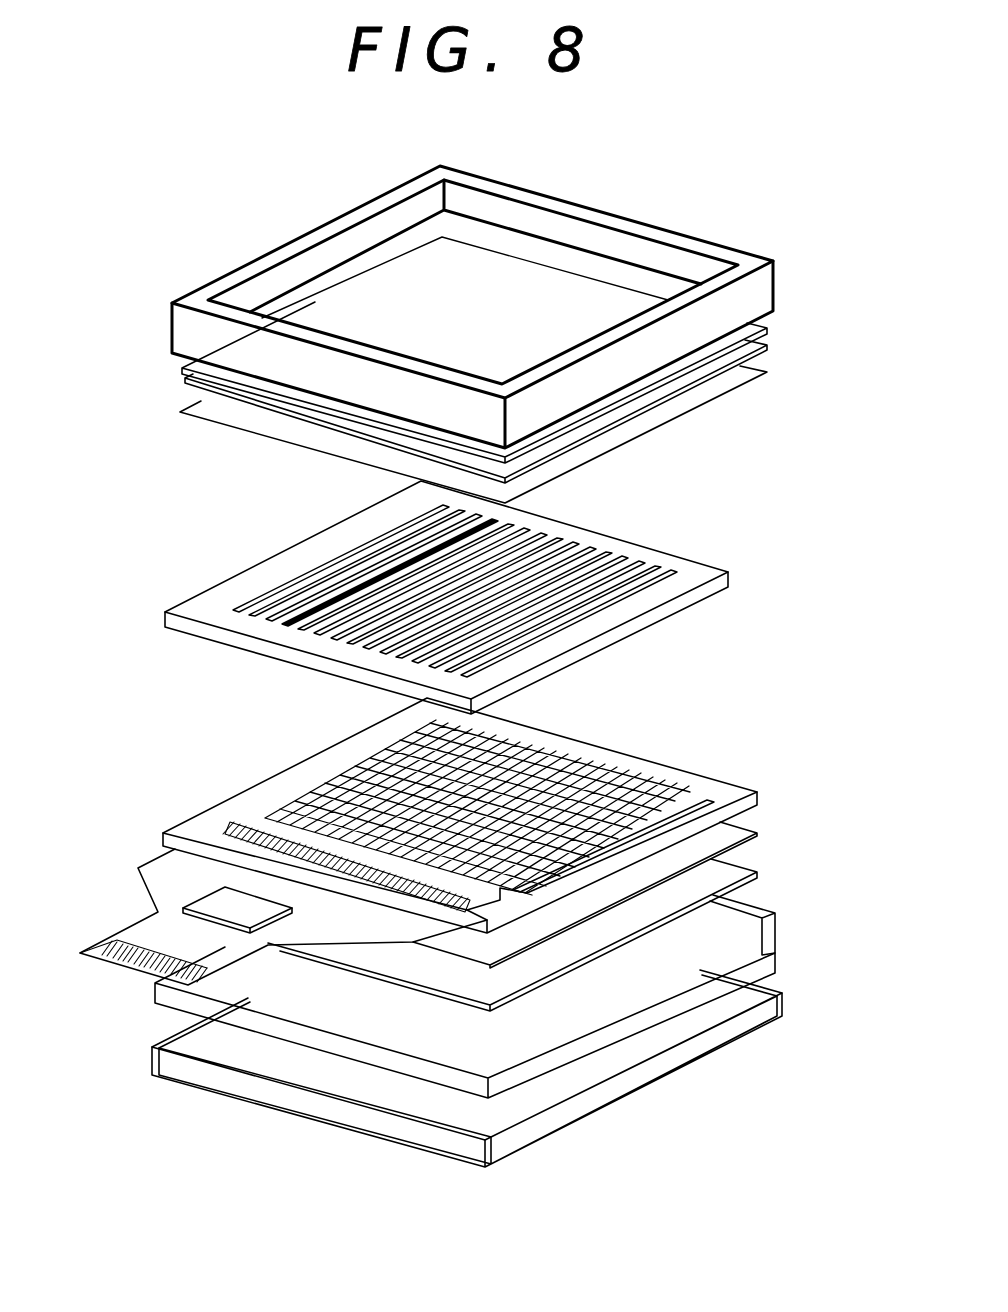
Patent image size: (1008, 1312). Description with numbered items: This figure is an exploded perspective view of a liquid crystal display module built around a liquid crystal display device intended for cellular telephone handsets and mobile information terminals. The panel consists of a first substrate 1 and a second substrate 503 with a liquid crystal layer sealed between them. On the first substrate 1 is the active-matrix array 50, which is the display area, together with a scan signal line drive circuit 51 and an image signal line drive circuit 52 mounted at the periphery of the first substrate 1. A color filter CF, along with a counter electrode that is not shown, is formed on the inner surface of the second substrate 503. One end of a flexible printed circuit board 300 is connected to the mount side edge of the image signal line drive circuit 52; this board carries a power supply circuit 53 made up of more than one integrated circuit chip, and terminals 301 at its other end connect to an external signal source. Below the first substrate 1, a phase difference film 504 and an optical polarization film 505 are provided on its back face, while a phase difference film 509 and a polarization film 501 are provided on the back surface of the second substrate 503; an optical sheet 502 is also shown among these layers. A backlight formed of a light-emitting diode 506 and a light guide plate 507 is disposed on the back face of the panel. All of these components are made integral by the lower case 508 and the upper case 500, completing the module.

The first substrate 1 is at (451, 798).
The active-matrix array 50 is at (580, 768).
The scan signal line drive circuit 51 is at (707, 800).
The image signal line drive circuit 52 is at (230, 822).
The power supply circuit 53 is at (233, 908).
The flexible printed circuit board 300 is at (247, 1009).
The terminals 301 is at (108, 951).
The upper case 500 is at (662, 229).
The polarization film 501 is at (182, 367).
The optical sheet 502 is at (185, 381).
The second substrate 503 is at (482, 595).
The color filter CF is at (622, 556).
The phase difference film 504 is at (752, 822).
The optical polarization film 505 is at (735, 862).
The light-emitting diode 506 is at (778, 937).
The light guide plate 507 is at (178, 1005).
The lower case 508 is at (634, 1088).
The phase difference film 509 is at (272, 442).